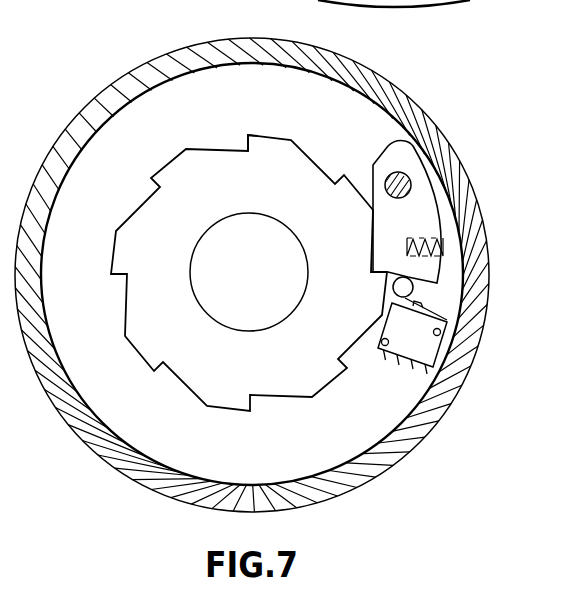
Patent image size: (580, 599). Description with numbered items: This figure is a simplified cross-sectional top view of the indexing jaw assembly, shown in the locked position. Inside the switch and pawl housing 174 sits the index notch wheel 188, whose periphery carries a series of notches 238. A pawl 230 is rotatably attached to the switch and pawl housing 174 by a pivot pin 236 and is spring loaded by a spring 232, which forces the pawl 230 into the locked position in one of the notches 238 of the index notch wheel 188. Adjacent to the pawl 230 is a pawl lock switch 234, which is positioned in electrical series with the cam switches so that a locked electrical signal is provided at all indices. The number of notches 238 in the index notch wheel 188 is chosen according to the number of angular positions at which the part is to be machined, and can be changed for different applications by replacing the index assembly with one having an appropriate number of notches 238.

The switch and pawl housing 174 is at (312, 117).
The index notch wheel 188 is at (298, 197).
The notches 238 is at (245, 148).
The pawl 230 is at (430, 212).
The pivot pin 236 is at (411, 193).
The spring 232 is at (457, 245).
The pawl lock switch 234 is at (425, 343).